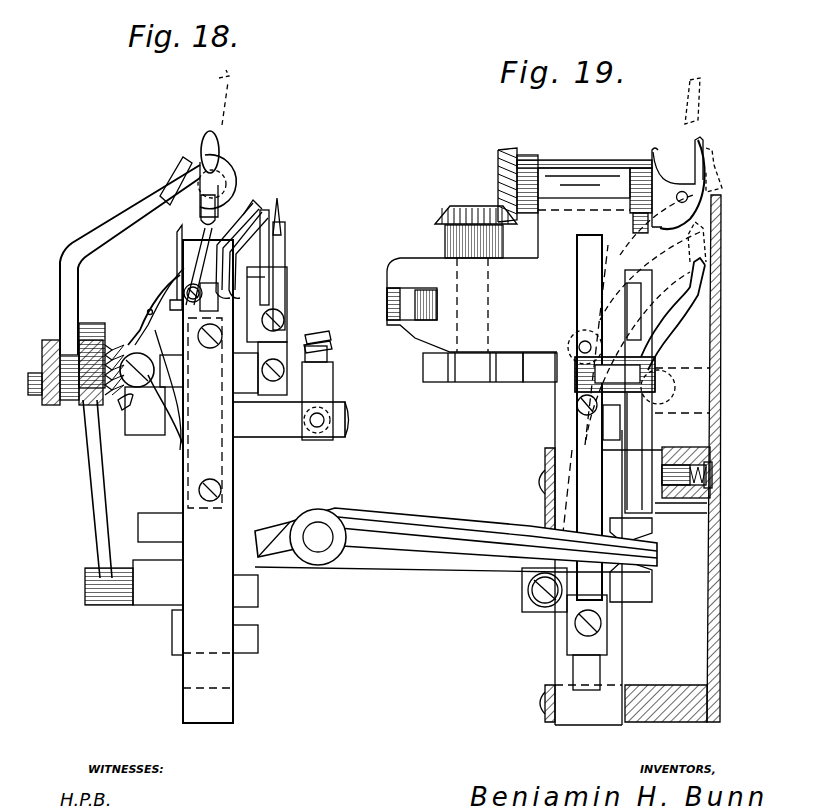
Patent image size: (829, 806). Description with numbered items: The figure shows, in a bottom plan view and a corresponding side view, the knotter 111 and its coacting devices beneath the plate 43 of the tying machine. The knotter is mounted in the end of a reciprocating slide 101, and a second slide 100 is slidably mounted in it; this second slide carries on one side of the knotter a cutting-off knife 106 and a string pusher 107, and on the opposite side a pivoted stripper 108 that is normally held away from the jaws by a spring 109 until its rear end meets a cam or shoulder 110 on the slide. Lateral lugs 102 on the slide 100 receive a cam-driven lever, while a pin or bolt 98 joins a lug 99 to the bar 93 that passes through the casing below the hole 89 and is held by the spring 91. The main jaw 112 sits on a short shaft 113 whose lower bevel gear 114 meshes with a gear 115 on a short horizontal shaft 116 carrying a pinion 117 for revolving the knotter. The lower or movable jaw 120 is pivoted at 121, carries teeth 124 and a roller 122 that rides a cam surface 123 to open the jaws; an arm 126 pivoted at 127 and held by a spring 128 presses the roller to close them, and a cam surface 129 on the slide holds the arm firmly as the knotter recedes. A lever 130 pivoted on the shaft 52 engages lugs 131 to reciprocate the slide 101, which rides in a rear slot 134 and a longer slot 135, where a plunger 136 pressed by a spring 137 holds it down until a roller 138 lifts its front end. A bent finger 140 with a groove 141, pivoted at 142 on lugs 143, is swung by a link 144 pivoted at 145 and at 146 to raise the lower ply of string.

In FIG. 19, the plate 43 is at (722, 331).
In FIG. 18, the pivot shaft 52 is at (318, 537).
In FIG. 18, the hole 89 is at (319, 329).
In FIG. 18, the spring 91 is at (326, 339).
In FIG. 18, the bar or rod 93 is at (317, 393).
In FIG. 18, the pin or bolt 98 is at (322, 430).
In FIG. 18, the lug or projection 99 is at (343, 420).
In FIG. 19, the reciprocating bar or slide 100 is at (585, 665).
In FIG. 18, the reciprocating bar or slide 100 is at (243, 437).
In FIG. 18, the slide 101 is at (208, 481).
In FIG. 18, the lugs or projections 102 is at (262, 600).
In FIG. 18, the cutting-off knife 106 is at (286, 218).
In FIG. 18, the string pusher 107 is at (282, 206).
In FIG. 19, the stripper 108 is at (710, 104).
In FIG. 18, the stripper 108 is at (172, 283).
In FIG. 18, the spring 109 is at (130, 395).
In FIG. 18, the cam or shoulder 110 is at (168, 440).
In FIG. 19, the knotter 111 is at (703, 138).
In FIG. 18, the knotter 111 is at (238, 158).
In FIG. 19, the main jaw 112 is at (706, 150).
In FIG. 18, the main jaw 112 is at (220, 140).
In FIG. 19, the short shaft 113 is at (582, 166).
In FIG. 19, the bevel gear 114 is at (513, 163).
In FIG. 19, the gear 115 is at (462, 205).
In FIG. 19, the short horizontal shaft 116 is at (490, 316).
In FIG. 19, the pinion 117 is at (435, 383).
In FIG. 19, the lower or movable jaw 120 is at (698, 162).
In FIG. 19, the pivot 121 is at (682, 191).
In FIG. 18, the roller 122 is at (176, 238).
In FIG. 18, the cam surface 123 is at (198, 212).
In FIG. 19, the teeth 124 is at (692, 165).
In FIG. 18, the arm 126 is at (232, 225).
In FIG. 19, the pivot 127 is at (588, 480).
In FIG. 18, the pivot 127 is at (203, 395).
In FIG. 18, the spring 128 is at (248, 212).
In FIG. 18, the cam surface 129 is at (255, 343).
In FIG. 18, the lever 130 is at (442, 560).
In FIG. 19, the lugs 131 is at (628, 598).
In FIG. 18, the lugs 131 is at (160, 527).
In FIG. 19, the rear slot 134 is at (627, 688).
In FIG. 19, the slot 135 is at (664, 452).
In FIG. 19, the plunger 136 is at (707, 508).
In FIG. 19, the spring 137 is at (712, 497).
In FIG. 19, the roller 138 is at (387, 290).
In FIG. 19, the bent arm or finger 140 is at (722, 181).
In FIG. 18, the bent arm or finger 140 is at (85, 237).
In FIG. 19, the groove 141 is at (718, 162).
In FIG. 18, the groove 141 is at (172, 182).
In FIG. 18, the pivot 142 is at (40, 396).
In FIG. 18, the lugs or projections 143 is at (62, 405).
In FIG. 19, the pitman rod or link 144 is at (562, 409).
In FIG. 18, the pitman rod or link 144 is at (98, 524).
In FIG. 18, the pivot 145 is at (100, 325).
In FIG. 19, the pivot 146 is at (527, 608).
In FIG. 18, the pivot 146 is at (97, 606).